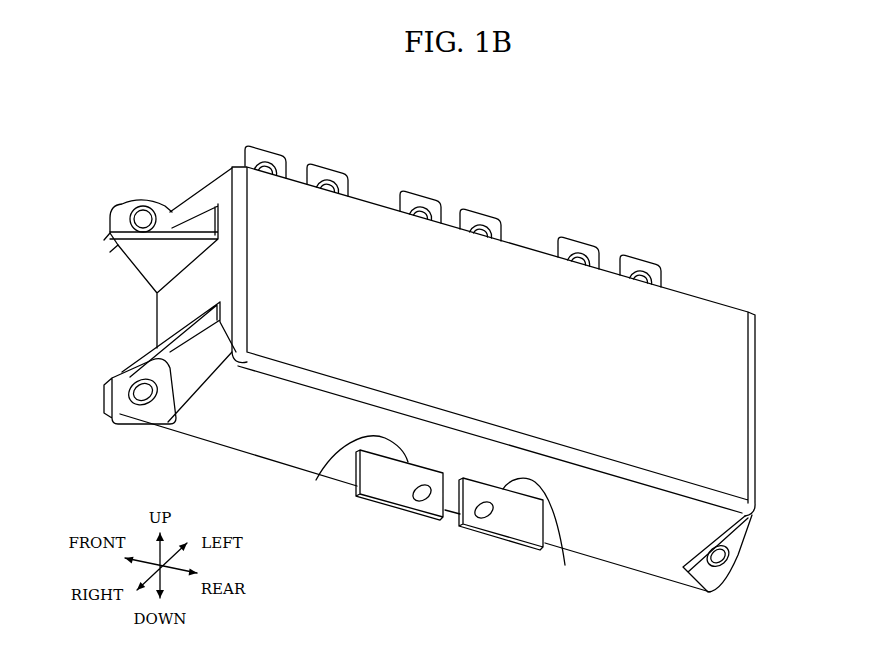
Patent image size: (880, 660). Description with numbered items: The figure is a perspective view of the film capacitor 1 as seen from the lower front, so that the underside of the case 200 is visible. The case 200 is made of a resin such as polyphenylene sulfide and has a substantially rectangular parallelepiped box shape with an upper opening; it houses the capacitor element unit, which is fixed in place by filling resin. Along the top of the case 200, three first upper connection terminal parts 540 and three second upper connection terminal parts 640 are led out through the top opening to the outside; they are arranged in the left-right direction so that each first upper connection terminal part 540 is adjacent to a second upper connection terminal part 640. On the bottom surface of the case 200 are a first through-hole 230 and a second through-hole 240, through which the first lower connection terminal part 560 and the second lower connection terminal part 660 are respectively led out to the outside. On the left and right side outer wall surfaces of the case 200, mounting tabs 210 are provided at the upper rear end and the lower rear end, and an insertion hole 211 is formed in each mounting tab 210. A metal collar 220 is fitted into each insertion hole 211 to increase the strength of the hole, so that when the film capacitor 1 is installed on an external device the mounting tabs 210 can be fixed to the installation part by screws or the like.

The film capacitor 1 is at (721, 261).
The case 200 is at (762, 350).
The mounting tabs 210 is at (143, 203).
The insertion hole 211 is at (167, 220).
The metal collar 220 is at (140, 212).
The first through-hole 230 is at (563, 565).
The second through-hole 240 is at (318, 476).
The first upper connection terminal parts 540 is at (270, 150).
The second upper connection terminal parts 640 is at (333, 165).
The first lower connection terminal part 560 is at (500, 543).
The second lower connection terminal part 660 is at (396, 513).